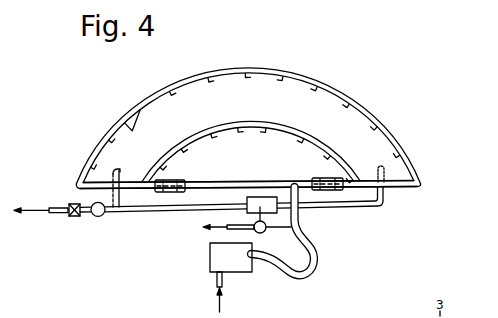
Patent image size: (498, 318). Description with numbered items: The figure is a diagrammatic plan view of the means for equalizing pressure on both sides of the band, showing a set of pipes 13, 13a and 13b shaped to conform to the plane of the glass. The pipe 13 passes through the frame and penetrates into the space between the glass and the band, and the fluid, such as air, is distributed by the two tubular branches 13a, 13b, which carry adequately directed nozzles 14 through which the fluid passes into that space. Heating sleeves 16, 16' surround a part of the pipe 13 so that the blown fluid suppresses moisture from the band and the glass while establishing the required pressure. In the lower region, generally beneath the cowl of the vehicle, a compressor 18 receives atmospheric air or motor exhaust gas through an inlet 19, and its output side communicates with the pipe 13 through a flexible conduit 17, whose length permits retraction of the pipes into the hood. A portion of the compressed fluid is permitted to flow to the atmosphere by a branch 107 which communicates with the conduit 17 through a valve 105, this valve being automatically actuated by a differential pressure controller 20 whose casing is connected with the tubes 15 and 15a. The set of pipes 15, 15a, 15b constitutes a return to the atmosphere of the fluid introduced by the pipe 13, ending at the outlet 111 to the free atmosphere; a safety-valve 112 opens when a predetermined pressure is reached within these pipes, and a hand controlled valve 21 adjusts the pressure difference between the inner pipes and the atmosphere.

The pipe 13 is at (202, 189).
The tubular branch 13a is at (392, 132).
The tubular branch 13b is at (290, 128).
The nozzles 14 is at (131, 127).
The tube 15 is at (152, 211).
The tube 15a is at (352, 206).
The pipe 15b is at (113, 171).
The heating sleeve 16 is at (320, 169).
The heating sleeve 16' is at (183, 171).
The flexible conduit 17 is at (318, 262).
The compressor 18 is at (239, 265).
The inlet 19 is at (217, 279).
The differential pressure controller 20 is at (262, 200).
The hand controlled valve 21 is at (73, 217).
The valve 105 is at (265, 232).
The branch 107 is at (237, 225).
The outlet 111 is at (55, 207).
The safety-valve 112 is at (99, 217).